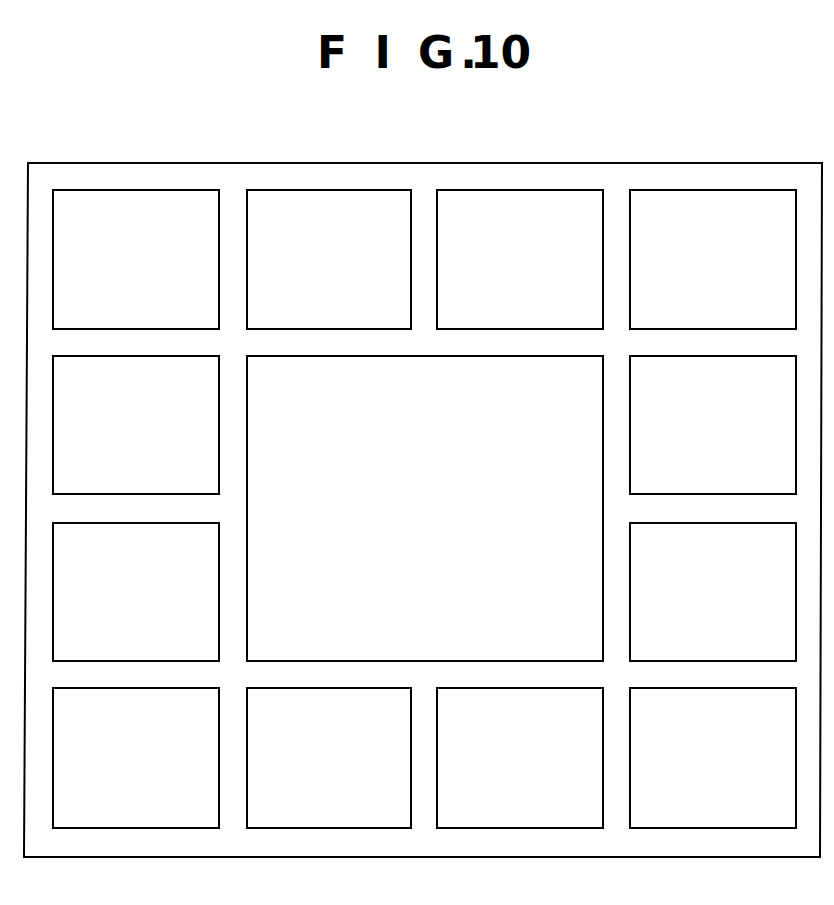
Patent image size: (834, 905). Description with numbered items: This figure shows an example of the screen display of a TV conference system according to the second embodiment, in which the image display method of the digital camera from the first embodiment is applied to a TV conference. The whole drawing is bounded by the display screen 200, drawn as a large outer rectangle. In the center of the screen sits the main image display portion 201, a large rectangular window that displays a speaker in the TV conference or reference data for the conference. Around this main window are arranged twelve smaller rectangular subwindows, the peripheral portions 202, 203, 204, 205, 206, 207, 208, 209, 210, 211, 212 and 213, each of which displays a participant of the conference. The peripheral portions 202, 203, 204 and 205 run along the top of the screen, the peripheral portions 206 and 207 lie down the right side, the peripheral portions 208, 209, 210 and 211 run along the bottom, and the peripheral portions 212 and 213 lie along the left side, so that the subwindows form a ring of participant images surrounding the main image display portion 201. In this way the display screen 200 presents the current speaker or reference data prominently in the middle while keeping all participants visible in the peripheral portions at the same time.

The display screen 200 is at (687, 163).
The main image display portion 201 is at (448, 524).
The peripheral portion 202 is at (161, 277).
The peripheral portion 203 is at (353, 277).
The peripheral portion 204 is at (544, 277).
The peripheral portion 205 is at (737, 277).
The peripheral portion 206 is at (737, 442).
The peripheral portion 207 is at (737, 609).
The peripheral portion 208 is at (737, 775).
The peripheral portion 209 is at (544, 775).
The peripheral portion 210 is at (353, 775).
The peripheral portion 211 is at (161, 775).
The peripheral portion 212 is at (161, 609).
The peripheral portion 213 is at (161, 442).